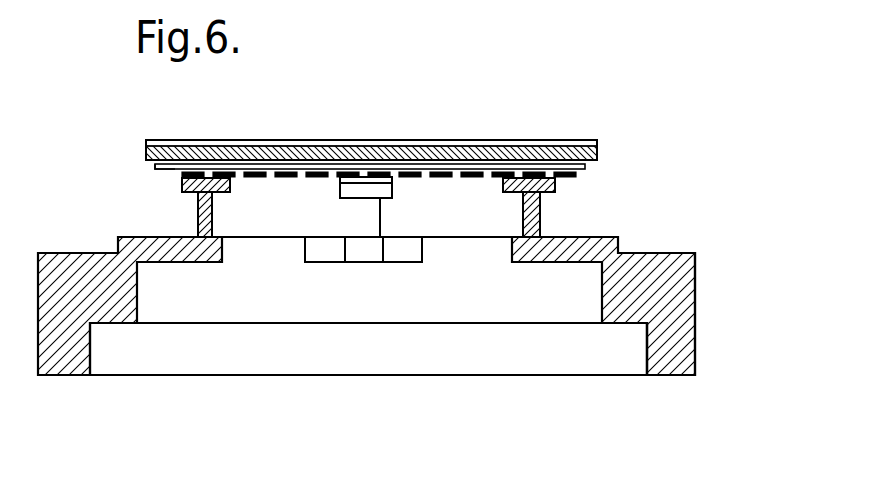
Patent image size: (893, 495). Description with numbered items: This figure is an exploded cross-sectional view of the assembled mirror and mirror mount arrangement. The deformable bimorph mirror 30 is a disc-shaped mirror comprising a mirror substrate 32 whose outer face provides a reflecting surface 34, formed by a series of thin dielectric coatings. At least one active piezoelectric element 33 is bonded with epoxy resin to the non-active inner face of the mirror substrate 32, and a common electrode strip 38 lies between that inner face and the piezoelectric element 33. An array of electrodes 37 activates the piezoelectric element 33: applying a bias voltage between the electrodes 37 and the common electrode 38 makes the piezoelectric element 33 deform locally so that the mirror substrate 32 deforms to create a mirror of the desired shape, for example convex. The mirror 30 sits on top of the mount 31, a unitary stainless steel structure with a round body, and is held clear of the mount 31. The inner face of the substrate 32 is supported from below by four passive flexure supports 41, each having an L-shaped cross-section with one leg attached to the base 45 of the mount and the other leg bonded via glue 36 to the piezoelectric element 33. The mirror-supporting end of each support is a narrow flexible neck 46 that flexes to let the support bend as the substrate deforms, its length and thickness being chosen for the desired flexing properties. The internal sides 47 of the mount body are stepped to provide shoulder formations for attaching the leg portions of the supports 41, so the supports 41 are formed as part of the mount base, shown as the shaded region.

The deformable bimorph mirror 30 is at (157, 138).
The mount 31 is at (123, 382).
The mirror substrate 32 is at (598, 152).
The piezoelectric element 33 is at (585, 167).
The reflecting surface 34 is at (301, 141).
The glue 36 is at (553, 179).
The electrodes 37 is at (317, 177).
The common electrode strip 38 is at (159, 165).
The flexure support 41 is at (523, 215).
The base 45 is at (695, 353).
The neck 46 is at (179, 187).
The internal sides 47 is at (640, 349).